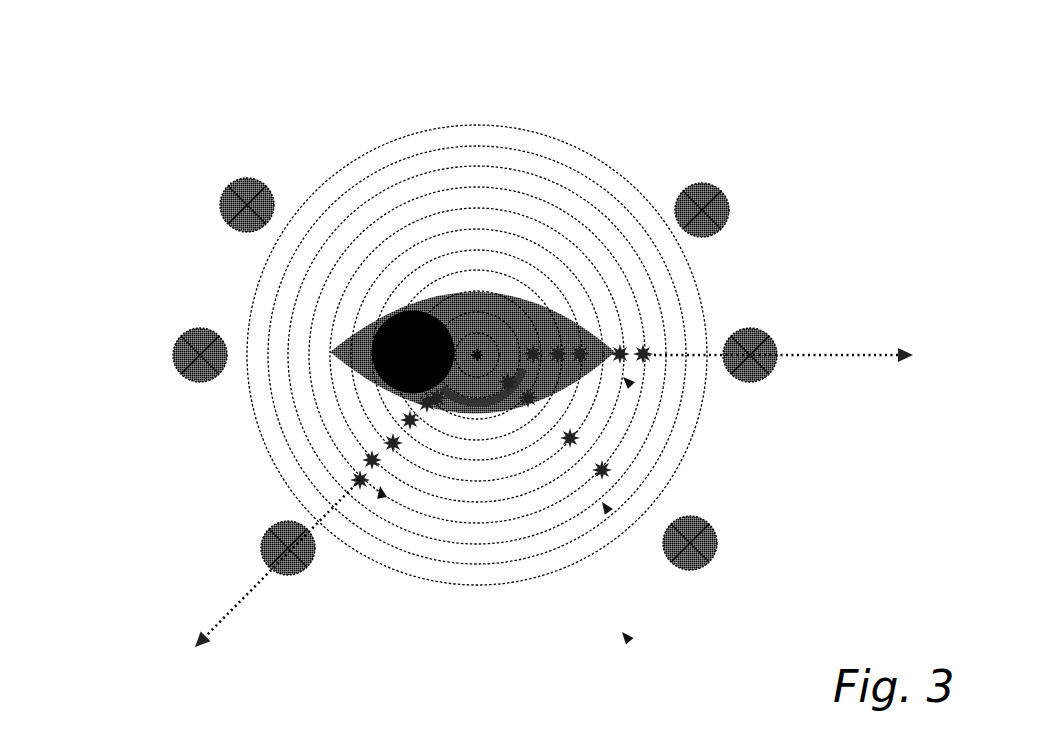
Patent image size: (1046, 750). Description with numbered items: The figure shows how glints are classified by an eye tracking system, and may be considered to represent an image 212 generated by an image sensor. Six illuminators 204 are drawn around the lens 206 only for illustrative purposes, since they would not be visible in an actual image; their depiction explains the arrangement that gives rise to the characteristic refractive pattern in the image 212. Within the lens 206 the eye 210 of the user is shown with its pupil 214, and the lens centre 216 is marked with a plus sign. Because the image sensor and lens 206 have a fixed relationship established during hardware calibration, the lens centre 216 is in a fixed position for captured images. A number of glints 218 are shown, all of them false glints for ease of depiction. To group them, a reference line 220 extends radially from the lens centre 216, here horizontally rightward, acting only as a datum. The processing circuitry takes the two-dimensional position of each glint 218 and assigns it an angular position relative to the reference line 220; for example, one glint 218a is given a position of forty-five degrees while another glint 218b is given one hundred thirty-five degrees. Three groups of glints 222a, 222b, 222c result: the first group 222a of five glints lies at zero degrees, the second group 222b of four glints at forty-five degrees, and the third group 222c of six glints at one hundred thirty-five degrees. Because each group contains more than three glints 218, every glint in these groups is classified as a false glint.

The illuminators 204 is at (230, 187).
The lens 206 is at (335, 175).
The eye 210 is at (480, 350).
The image 212 is at (628, 640).
The pupil 214 is at (410, 312).
The lens centre 216 is at (527, 365).
The glints 218 is at (533, 353).
The glint 218a is at (652, 360).
The glint 218b is at (370, 462).
The reference line 220 is at (870, 360).
The first group of glints 222a is at (630, 384).
The second group of glints 222b is at (607, 509).
The third group of glints 222c is at (384, 496).